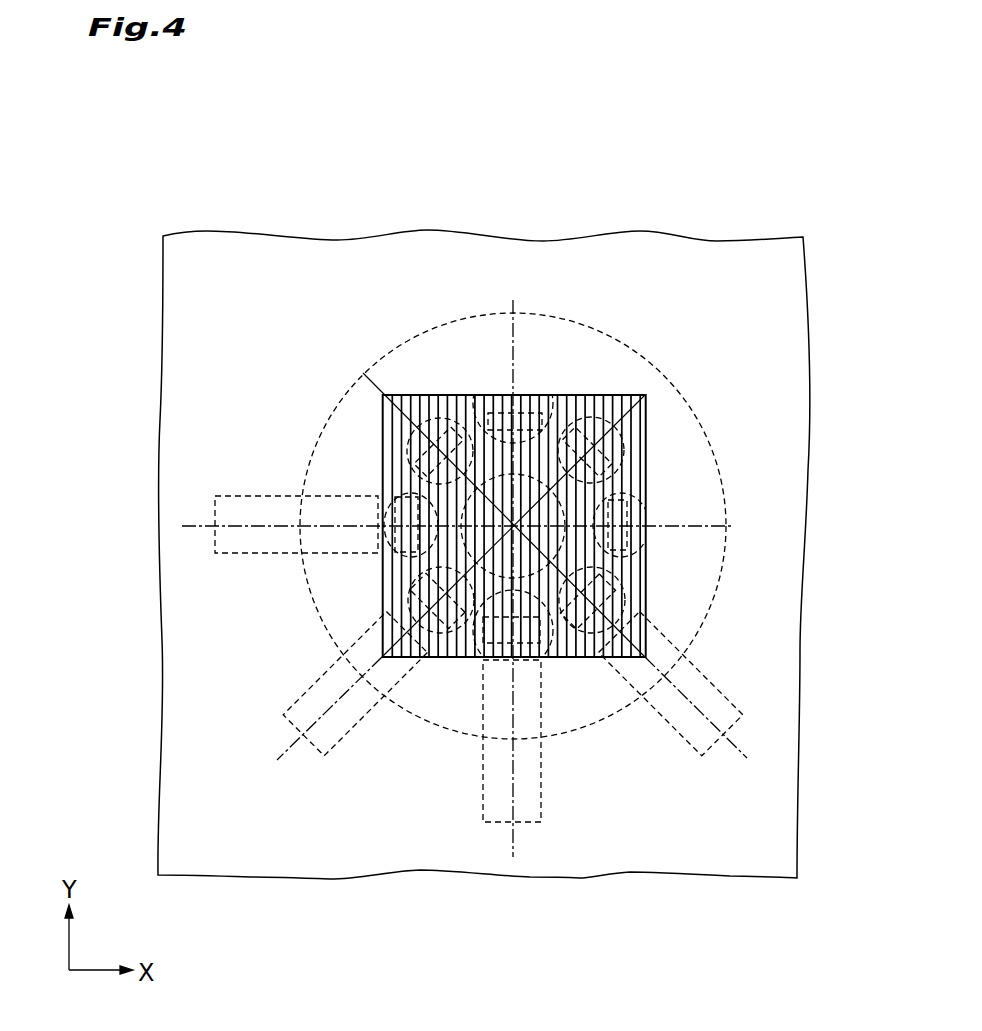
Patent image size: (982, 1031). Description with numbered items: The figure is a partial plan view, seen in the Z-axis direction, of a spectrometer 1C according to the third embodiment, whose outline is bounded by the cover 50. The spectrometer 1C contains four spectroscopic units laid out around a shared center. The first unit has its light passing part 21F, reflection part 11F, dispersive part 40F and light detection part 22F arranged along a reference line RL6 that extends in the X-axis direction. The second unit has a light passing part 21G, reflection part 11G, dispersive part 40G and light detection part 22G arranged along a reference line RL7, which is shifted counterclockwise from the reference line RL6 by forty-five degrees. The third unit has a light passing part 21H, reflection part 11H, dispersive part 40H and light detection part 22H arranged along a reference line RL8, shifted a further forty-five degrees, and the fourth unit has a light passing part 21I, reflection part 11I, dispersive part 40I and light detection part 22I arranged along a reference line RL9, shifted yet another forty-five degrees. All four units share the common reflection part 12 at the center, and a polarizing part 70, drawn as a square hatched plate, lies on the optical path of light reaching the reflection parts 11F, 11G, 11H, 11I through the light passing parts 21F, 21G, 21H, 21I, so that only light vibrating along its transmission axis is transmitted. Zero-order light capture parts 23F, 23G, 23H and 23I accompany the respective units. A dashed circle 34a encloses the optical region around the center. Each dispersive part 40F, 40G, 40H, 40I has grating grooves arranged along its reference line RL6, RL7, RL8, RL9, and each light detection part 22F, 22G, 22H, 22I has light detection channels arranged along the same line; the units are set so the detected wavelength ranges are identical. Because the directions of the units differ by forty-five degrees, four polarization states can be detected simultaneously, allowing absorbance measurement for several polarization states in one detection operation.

The spectrometer 1C is at (682, 214).
The cover 50 is at (740, 256).
The polarizing part 70 is at (583, 395).
The common reflection part 12 is at (646, 556).
The vibrating region 34a is at (637, 348).
The reflection part 11F is at (644, 466).
The reflection part 11G is at (612, 395).
The reflection part 11H is at (500, 394).
The reflection part 11I is at (363, 373).
The light passing part 21F is at (645, 531).
The light passing part 21G is at (644, 399).
The light passing part 21H is at (540, 395).
The light passing part 21I is at (428, 395).
The light detection part 22F is at (237, 496).
The light detection part 22G is at (303, 745).
The light detection part 22H is at (541, 826).
The light detection part 22I is at (712, 747).
The zero-order light capture part 23F is at (383, 588).
The zero-order light capture part 23G is at (470, 657).
The zero-order light capture part 23H is at (567, 658).
The zero-order light capture part 23I is at (645, 586).
The dispersive part 40F is at (383, 545).
The dispersive part 40G is at (420, 657).
The dispersive part 40H is at (550, 657).
The dispersive part 40I is at (644, 600).
The reference line RL6 is at (197, 526).
The reference line RL7 is at (290, 740).
The reference line RL8 is at (513, 838).
The reference line RL9 is at (742, 748).